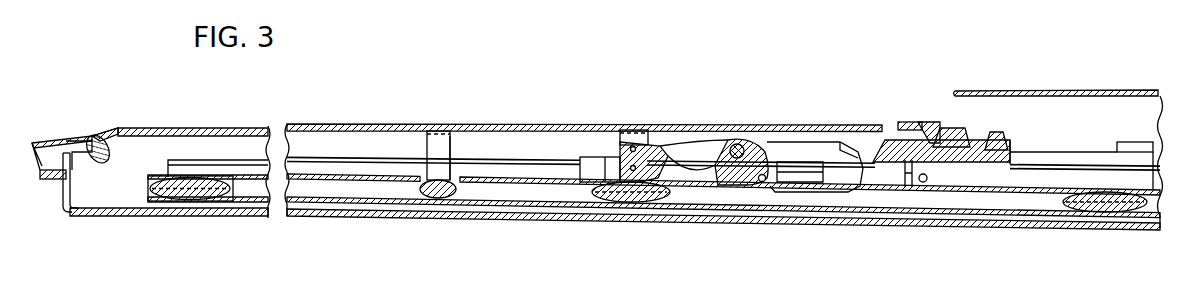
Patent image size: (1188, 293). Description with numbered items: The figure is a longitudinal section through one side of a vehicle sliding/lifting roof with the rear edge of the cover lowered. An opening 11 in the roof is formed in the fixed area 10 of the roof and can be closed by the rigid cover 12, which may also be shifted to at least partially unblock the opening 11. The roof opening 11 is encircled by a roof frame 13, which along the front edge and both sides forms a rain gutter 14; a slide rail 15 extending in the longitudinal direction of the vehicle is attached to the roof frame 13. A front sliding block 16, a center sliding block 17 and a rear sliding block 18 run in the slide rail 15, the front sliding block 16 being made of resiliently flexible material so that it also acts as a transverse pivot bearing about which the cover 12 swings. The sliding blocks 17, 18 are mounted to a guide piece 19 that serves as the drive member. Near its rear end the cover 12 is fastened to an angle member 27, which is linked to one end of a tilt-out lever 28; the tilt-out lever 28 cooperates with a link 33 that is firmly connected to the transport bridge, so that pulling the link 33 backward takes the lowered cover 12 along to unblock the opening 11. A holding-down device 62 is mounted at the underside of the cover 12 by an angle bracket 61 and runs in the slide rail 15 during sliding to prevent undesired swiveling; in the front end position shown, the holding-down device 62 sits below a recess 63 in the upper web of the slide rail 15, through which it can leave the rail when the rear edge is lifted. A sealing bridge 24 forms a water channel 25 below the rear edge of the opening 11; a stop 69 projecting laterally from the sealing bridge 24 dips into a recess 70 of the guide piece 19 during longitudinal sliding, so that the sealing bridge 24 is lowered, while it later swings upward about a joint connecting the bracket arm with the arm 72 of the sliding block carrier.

The fixed area of the roof 10 is at (46, 141).
The opening in the roof 11 is at (910, 97).
The cover 12 is at (525, 126).
The roof frame 13 is at (128, 216).
The rain gutter 14 is at (87, 205).
The slide rail 15 is at (348, 187).
The front sliding block 16 is at (196, 199).
The center sliding block 17 is at (630, 203).
The rear sliding block 18 is at (1113, 211).
The guide piece 19 is at (1042, 175).
The sealing bridge 24 is at (1000, 147).
The water channel 25 is at (977, 147).
The angle member 27 is at (637, 135).
The tilt-out lever 28 is at (673, 150).
The link 33 is at (787, 155).
The angle bracket 61 is at (435, 142).
The holding-down device 62 is at (437, 200).
The recess 63 is at (455, 178).
The stop 69 is at (922, 183).
The recess of the guide piece 70 is at (930, 180).
The arm of the sliding block carrier 72 is at (1130, 147).